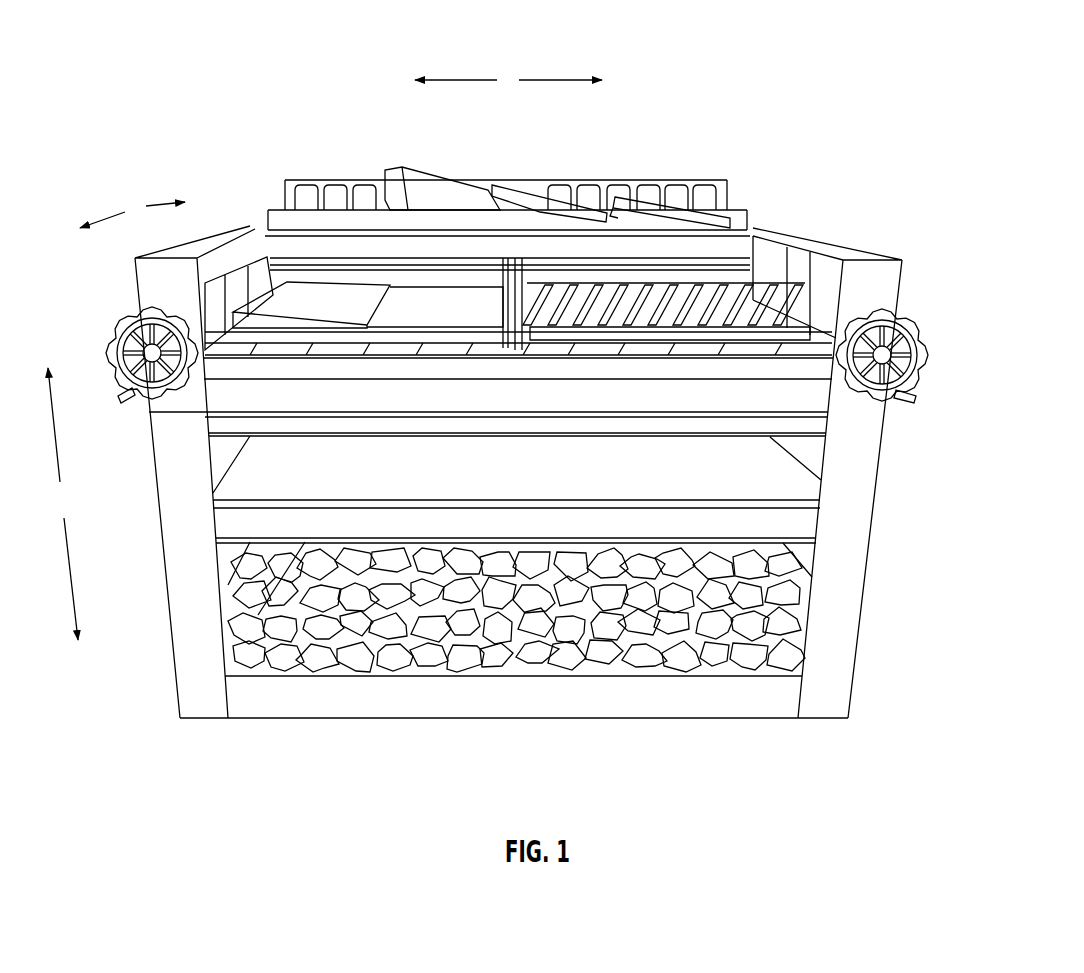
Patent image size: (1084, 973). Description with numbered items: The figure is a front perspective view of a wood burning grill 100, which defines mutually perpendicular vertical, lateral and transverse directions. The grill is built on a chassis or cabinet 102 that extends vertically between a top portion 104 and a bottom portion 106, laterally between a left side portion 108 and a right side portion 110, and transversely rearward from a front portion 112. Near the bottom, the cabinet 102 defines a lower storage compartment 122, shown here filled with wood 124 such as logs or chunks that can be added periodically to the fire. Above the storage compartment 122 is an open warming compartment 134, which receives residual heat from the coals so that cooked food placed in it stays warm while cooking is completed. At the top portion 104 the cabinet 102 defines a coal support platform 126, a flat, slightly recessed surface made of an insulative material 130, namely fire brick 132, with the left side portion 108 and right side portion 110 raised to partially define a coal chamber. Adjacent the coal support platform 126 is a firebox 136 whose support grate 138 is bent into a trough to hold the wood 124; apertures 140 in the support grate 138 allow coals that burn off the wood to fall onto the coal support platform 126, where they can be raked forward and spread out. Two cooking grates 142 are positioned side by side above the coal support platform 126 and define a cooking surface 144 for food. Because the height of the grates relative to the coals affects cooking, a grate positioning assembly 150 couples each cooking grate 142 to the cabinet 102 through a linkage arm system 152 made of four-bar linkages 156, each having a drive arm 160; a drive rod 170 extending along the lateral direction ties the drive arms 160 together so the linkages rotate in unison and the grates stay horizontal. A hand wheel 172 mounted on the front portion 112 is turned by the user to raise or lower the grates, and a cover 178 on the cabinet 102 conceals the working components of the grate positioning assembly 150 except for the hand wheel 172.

The wood burning grill 100 is at (857, 110).
The cabinet 102 is at (873, 517).
The top portion 104 is at (853, 250).
The bottom portion 106 is at (778, 720).
The left side portion 108 is at (175, 672).
The right side portion 110 is at (857, 648).
The front portion 112 is at (302, 695).
The storage compartment 122 is at (278, 571).
The wood 124 is at (427, 190).
The coal support platform 126 is at (233, 345).
The insulative material 130 is at (809, 234).
The fire brick 132 is at (803, 292).
The warming compartment 134 is at (785, 480).
The firebox 136 is at (328, 192).
The support grate 138 is at (657, 184).
The apertures 140 is at (707, 190).
The cooking grate 142 is at (444, 336).
The cooking surface 144 is at (308, 298).
The grate positioning assembly 150 is at (922, 312).
The linkage arm system 152 is at (505, 268).
The four-bar linkage 156 is at (262, 292).
The drive arm 160 is at (773, 268).
The drive rod 170 is at (735, 248).
The hand wheel 172 is at (130, 380).
The cover 178 is at (147, 280).